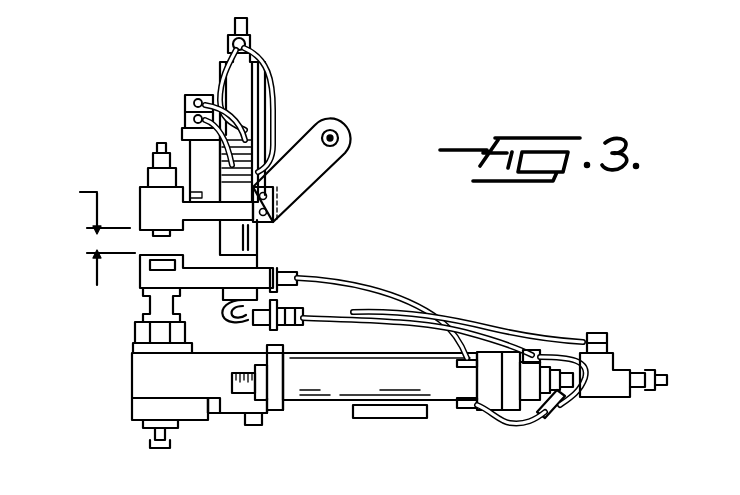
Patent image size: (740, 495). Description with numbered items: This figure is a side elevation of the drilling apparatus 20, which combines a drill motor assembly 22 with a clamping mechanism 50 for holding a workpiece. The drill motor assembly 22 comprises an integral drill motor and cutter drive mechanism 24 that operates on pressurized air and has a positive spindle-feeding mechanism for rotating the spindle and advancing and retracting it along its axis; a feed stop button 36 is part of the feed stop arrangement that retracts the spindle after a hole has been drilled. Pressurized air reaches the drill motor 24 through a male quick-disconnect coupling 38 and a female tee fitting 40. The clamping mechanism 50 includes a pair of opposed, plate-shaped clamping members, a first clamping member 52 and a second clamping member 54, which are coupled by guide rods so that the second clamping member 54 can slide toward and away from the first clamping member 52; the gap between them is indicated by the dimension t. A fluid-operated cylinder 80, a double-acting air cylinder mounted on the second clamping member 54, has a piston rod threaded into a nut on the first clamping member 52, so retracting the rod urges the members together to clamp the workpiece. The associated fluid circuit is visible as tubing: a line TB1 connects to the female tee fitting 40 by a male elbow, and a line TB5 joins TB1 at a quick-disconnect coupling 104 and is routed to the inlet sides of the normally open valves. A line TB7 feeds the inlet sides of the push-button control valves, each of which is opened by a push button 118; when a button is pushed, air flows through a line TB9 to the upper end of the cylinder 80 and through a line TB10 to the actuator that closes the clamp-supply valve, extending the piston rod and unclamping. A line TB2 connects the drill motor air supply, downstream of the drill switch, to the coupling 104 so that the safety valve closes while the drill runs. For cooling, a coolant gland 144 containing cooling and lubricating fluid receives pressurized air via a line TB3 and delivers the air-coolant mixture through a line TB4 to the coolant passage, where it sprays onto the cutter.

The drilling apparatus 20 is at (100, 334).
The drill motor assembly 22 is at (391, 335).
The drill motor and cutter drive mechanism 24 is at (135, 395).
The feed stop button 36 is at (158, 450).
The male quick-disconnect coupling 38 is at (660, 390).
The female tee fitting 40 is at (620, 368).
The clamping mechanism 50 is at (333, 104).
The first clamping member 52 is at (136, 288).
The second clamping member 54 is at (133, 191).
The fluid-operated cylinder 80 is at (258, 96).
The quick-disconnect coupling 104 is at (294, 322).
The push button 118 is at (347, 150).
The coolant gland 144 is at (438, 412).
The gap dimension t is at (91, 230).
The line TB1 is at (553, 335).
The line TB2 is at (445, 322).
The line TB3 is at (533, 430).
The line TB4 is at (343, 280).
The line TB5 is at (215, 100).
The line TB7 is at (195, 128).
The line TB9 is at (270, 68).
The line TB10 is at (225, 62).